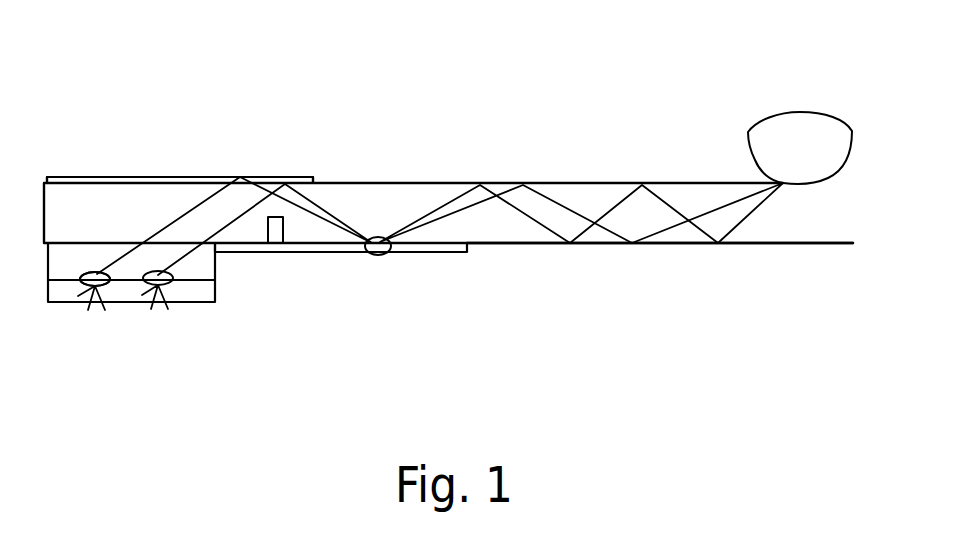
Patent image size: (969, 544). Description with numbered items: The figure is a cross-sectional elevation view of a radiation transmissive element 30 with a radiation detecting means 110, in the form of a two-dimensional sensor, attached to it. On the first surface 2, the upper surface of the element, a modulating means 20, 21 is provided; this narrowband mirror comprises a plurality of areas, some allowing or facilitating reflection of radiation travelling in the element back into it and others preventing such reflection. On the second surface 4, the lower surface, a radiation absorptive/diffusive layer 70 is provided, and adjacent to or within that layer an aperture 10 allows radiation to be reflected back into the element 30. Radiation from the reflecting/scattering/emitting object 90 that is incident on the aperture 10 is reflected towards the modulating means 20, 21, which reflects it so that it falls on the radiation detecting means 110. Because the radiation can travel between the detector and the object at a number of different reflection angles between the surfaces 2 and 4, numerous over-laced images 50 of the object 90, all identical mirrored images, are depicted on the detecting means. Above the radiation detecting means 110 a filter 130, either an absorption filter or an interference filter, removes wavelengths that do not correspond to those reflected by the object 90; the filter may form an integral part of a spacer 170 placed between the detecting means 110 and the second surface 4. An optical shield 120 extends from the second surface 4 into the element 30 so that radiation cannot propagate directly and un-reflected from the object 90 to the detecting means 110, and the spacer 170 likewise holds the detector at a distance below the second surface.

The first surface 2 is at (386, 179).
The second surface 4 is at (620, 243).
The modulating means 21 is at (147, 178).
The modulating means 20 is at (147, 178).
The radiation transmissive element 30 is at (594, 190).
The reflecting/scattering/emitting object 90 is at (798, 112).
The radiation absorptive/diffusive layer 70 is at (455, 255).
The aperture 10 is at (377, 254).
The optical shield 120 is at (284, 228).
The spacer 170 is at (218, 268).
The filter 130 is at (217, 288).
The over-laced images 50 is at (97, 291).
The radiation detecting means 110 is at (103, 292).